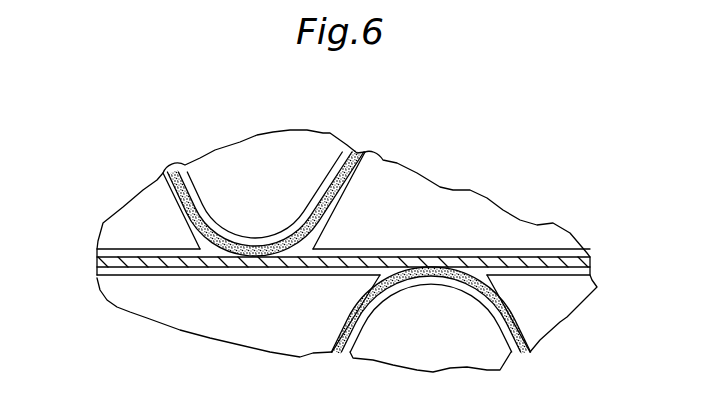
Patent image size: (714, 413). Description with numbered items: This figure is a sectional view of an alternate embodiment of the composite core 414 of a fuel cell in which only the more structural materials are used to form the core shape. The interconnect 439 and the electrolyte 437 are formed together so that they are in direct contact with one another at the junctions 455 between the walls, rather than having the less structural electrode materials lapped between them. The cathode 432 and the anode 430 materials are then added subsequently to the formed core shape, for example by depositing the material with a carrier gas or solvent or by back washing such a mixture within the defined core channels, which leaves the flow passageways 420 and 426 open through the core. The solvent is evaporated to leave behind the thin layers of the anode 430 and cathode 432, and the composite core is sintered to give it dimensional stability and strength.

The body 414 is at (459, 185).
The flow passageway 420 is at (268, 160).
The flow passageway 426 is at (512, 238).
The anode 430 is at (187, 156).
The cathode 432 is at (543, 250).
The electrolyte 437 is at (362, 172).
The interconnect 439 is at (113, 262).
The junction 455 is at (433, 260).